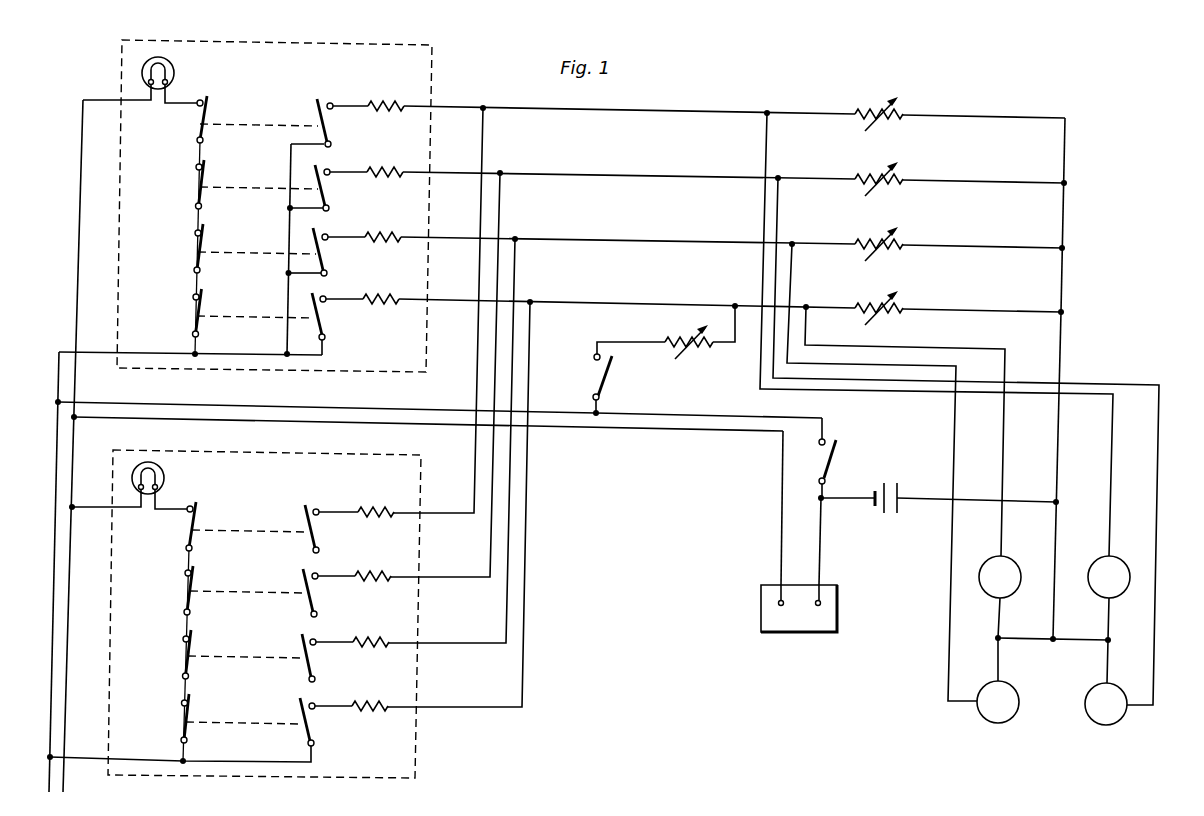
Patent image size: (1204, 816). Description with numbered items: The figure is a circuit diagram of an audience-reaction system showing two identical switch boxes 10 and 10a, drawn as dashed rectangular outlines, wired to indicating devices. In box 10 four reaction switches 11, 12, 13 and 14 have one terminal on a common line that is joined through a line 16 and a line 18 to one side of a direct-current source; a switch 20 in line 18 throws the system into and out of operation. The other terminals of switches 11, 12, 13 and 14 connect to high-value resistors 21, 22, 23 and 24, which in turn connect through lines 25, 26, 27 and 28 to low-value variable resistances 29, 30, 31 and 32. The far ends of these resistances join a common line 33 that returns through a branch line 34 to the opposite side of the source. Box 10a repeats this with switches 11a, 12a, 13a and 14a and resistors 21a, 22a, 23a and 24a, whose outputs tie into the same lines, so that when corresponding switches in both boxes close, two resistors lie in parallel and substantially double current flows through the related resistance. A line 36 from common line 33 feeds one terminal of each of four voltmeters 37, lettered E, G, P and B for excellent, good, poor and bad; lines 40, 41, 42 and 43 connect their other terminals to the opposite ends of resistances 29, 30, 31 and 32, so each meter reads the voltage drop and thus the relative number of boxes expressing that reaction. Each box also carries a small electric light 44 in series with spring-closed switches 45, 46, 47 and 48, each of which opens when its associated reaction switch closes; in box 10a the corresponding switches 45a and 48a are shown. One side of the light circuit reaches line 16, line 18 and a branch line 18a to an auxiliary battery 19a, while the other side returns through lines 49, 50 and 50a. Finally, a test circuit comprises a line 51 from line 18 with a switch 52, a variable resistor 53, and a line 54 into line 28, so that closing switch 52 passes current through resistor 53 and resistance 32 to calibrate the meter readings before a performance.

The switch box 10 is at (116, 63).
The switch box 10a is at (314, 446).
The switch 11 is at (316, 115).
The switch 12 is at (321, 186).
The switch 13 is at (320, 250).
The switch 14 is at (318, 313).
The switch 11a is at (305, 514).
The switch 12a is at (329, 593).
The switch 13a is at (327, 658).
The switch 14a is at (316, 738).
The line 16 is at (58, 377).
The line 18 is at (280, 407).
The branch line 18a is at (828, 557).
The battery 19a is at (815, 637).
The switch 20 is at (839, 462).
The resistor 21 is at (388, 100).
The resistor 22 is at (388, 165).
The resistor 23 is at (383, 230).
The resistor 24 is at (383, 294).
The resistor 21a is at (376, 508).
The resistor 22a is at (380, 572).
The resistor 23a is at (380, 638).
The resistor 24a is at (380, 702).
The line 25 is at (639, 112).
The line 26 is at (636, 177).
The line 27 is at (640, 241).
The line 28 is at (637, 305).
The variable resistance 29 is at (858, 113).
The variable resistance 30 is at (856, 178).
The variable resistance 31 is at (857, 244).
The variable resistance 32 is at (856, 308).
The common line 33 is at (1063, 228).
The branch line 34 is at (925, 497).
The line 36 is at (1060, 358).
The voltmeter 37 is at (1015, 561).
The line 40 is at (1111, 470).
The line 41 is at (1155, 593).
The line 42 is at (948, 622).
The line 43 is at (1002, 486).
The electric light 44 is at (168, 60).
The switch 45 is at (200, 127).
The switch 46 is at (198, 190).
The switch 47 is at (199, 253).
The switch 48 is at (196, 319).
The switch 45a is at (192, 528).
The switch 48a is at (186, 728).
The line 49 is at (79, 228).
The line 50 is at (239, 422).
The line 50a is at (780, 547).
The line 51 is at (598, 408).
The switch 52 is at (603, 368).
The resistor 53 is at (684, 355).
The line 54 is at (737, 325).